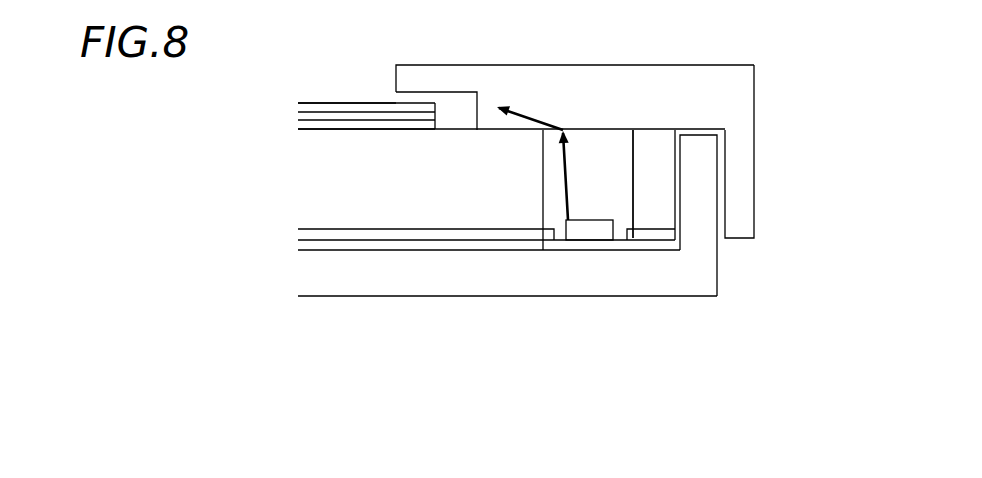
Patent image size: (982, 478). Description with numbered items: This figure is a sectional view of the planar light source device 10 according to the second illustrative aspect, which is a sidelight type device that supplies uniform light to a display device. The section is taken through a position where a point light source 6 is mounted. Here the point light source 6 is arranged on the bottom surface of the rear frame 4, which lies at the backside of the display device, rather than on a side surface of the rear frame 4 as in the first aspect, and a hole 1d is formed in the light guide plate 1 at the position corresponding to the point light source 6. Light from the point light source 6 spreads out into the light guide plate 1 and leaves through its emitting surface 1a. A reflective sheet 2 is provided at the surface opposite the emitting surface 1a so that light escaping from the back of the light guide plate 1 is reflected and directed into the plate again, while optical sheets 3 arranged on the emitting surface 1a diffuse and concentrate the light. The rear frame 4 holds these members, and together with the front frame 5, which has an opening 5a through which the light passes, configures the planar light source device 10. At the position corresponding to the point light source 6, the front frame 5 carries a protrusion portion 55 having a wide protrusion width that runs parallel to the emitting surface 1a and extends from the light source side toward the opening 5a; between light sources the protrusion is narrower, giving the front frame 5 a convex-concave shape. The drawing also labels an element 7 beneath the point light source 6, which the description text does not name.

The light guide plate 1 is at (405, 220).
The emitting surface 1a is at (340, 130).
The holes 1d is at (615, 175).
The reflective sheet 2 is at (463, 232).
The optical sheets 3 is at (300, 92).
The rear frame 4 is at (695, 285).
The front frame 5 is at (743, 132).
The opening 5a is at (310, 85).
The protrusion portion 55 is at (505, 87).
The point light sources 6 is at (593, 220).
The light emitting element 7 is at (605, 242).
The planar light source device 10 is at (708, 310).